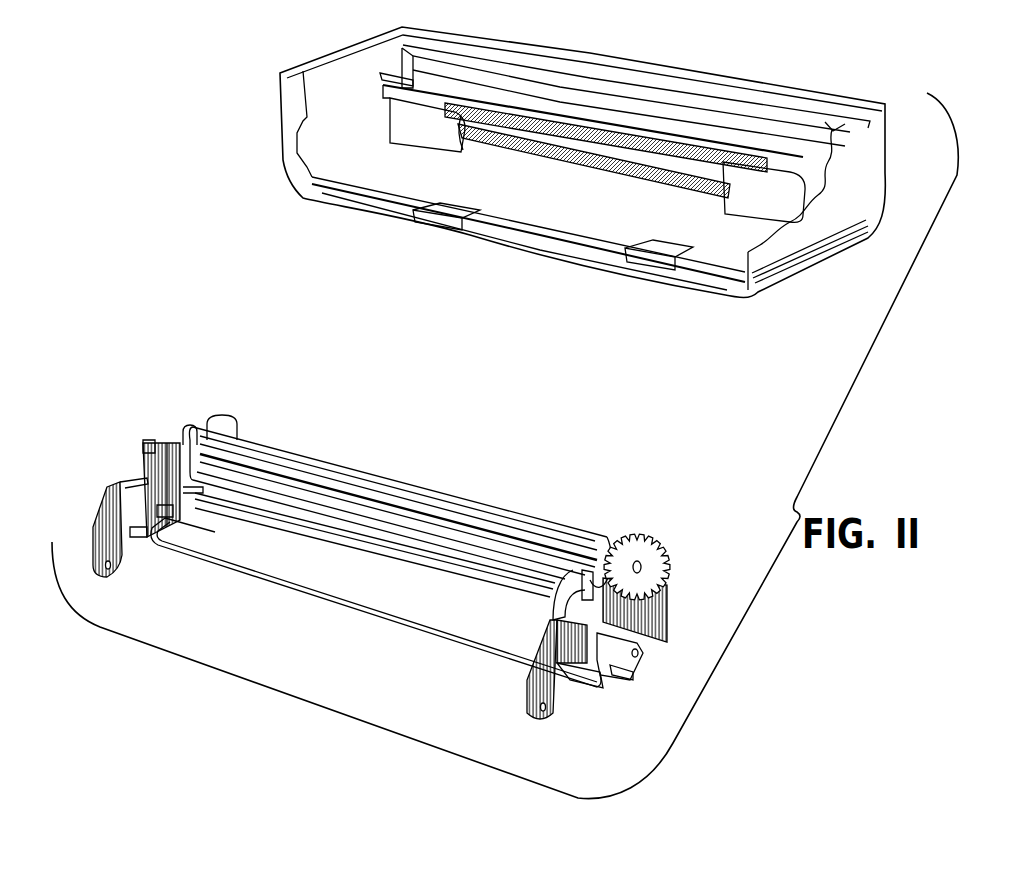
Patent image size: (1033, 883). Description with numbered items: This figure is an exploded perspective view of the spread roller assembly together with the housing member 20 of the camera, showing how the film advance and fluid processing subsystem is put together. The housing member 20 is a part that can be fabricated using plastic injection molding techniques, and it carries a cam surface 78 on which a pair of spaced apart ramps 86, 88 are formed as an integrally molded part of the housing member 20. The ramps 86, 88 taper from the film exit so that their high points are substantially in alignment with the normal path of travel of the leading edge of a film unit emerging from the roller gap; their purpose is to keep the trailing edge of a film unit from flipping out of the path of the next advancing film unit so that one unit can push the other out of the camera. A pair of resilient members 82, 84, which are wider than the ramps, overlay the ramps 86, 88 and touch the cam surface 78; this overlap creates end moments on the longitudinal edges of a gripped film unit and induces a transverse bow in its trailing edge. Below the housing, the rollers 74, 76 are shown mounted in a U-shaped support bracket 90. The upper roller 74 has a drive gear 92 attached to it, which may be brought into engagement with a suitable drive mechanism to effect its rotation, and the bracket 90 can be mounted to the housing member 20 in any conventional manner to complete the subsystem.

The housing member 20 is at (646, 60).
The upper roller 74 is at (432, 500).
The roller 76 is at (418, 545).
The cam surface 78 is at (572, 128).
The resilient member 82 is at (466, 125).
The resilient member 84 is at (732, 185).
The ramp 86 is at (418, 98).
The ramp 88 is at (778, 163).
The U-shaped support bracket 90 is at (237, 418).
The drive gear 92 is at (658, 530).